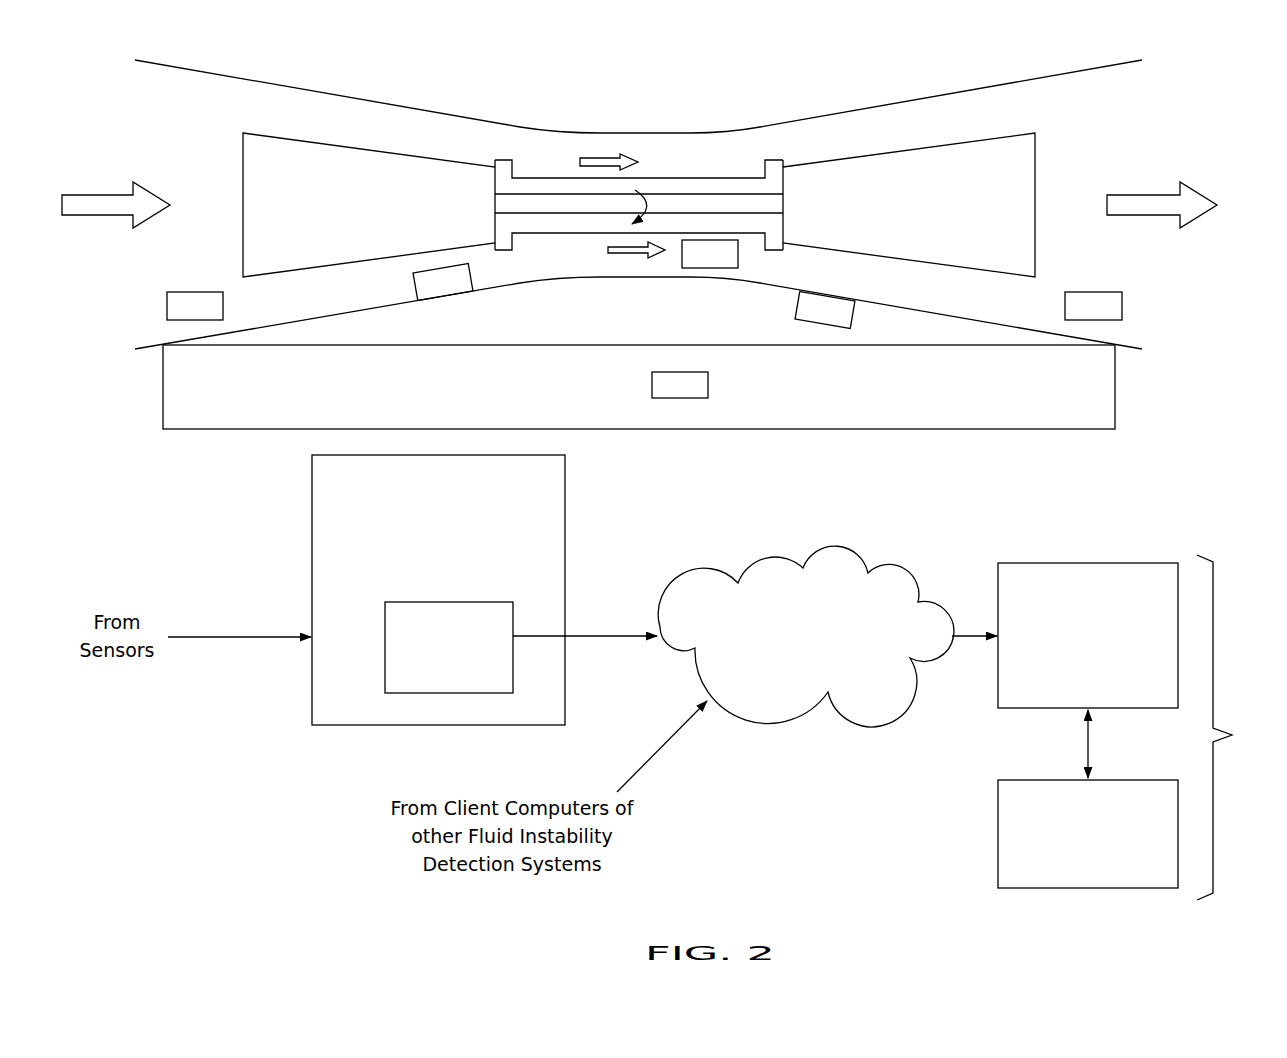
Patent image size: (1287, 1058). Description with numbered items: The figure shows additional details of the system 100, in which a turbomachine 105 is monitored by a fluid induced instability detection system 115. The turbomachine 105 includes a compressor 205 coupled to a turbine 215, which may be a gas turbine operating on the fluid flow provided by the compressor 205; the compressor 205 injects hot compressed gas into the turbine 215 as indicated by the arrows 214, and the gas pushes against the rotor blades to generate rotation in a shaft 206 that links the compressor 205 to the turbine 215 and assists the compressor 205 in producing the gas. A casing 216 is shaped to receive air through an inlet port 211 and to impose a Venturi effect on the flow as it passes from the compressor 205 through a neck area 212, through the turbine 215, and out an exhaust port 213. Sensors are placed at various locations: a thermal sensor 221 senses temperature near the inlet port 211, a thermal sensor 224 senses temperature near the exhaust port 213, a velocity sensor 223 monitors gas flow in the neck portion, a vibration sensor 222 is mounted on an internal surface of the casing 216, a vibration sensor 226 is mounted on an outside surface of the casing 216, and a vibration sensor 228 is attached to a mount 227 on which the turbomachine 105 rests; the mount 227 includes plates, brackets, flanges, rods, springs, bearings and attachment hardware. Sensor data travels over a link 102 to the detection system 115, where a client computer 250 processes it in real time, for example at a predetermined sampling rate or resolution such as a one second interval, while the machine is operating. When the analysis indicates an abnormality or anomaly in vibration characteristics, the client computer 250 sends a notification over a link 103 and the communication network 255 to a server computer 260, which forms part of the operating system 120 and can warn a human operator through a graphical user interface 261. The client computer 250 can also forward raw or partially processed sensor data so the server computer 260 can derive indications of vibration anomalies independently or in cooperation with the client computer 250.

The system 100 is at (174, 879).
The link 102 is at (208, 637).
The link 103 is at (580, 636).
The turbomachine 105 is at (665, 78).
The fluid induced instability detection system 115 is at (520, 486).
The operating system 120 is at (1237, 727).
The compressor 205 is at (270, 181).
The shaft 206 is at (588, 214).
The inlet port 211 is at (112, 168).
The neck area 212 is at (666, 171).
The exhaust port 213 is at (1185, 168).
The arrows 214 is at (592, 156).
The turbine 215 is at (963, 181).
The casing 216 is at (512, 289).
The thermal sensor 221 is at (177, 316).
The vibration sensor 222 is at (443, 281).
The velocity sensor 223 is at (692, 265).
The thermal sensor 224 is at (1075, 316).
The vibration sensor 226 is at (825, 309).
The mount 227 is at (1063, 376).
The vibration sensor 228 is at (662, 395).
The client computer 250 is at (468, 626).
The communication network 255 is at (817, 591).
The server computer 260 is at (1128, 596).
The graphical user interface 261 is at (1128, 809).